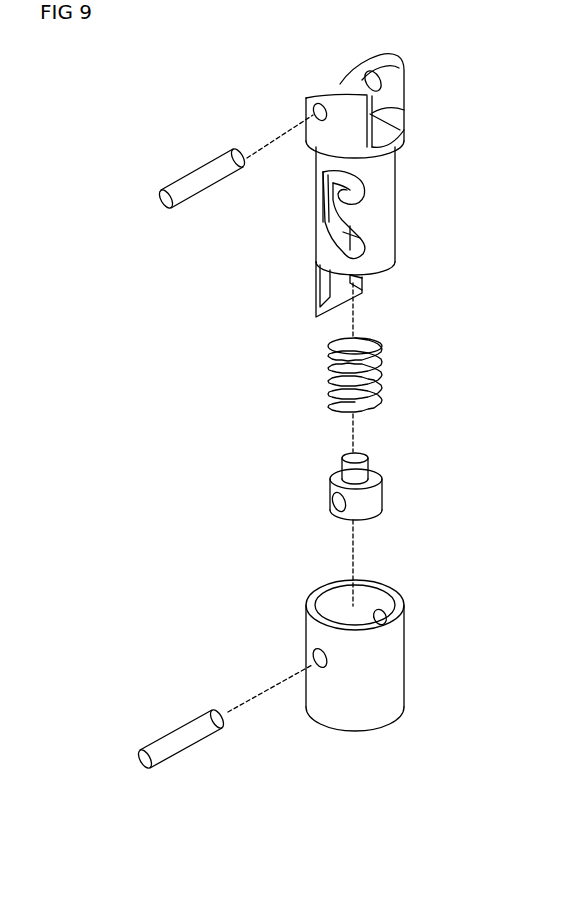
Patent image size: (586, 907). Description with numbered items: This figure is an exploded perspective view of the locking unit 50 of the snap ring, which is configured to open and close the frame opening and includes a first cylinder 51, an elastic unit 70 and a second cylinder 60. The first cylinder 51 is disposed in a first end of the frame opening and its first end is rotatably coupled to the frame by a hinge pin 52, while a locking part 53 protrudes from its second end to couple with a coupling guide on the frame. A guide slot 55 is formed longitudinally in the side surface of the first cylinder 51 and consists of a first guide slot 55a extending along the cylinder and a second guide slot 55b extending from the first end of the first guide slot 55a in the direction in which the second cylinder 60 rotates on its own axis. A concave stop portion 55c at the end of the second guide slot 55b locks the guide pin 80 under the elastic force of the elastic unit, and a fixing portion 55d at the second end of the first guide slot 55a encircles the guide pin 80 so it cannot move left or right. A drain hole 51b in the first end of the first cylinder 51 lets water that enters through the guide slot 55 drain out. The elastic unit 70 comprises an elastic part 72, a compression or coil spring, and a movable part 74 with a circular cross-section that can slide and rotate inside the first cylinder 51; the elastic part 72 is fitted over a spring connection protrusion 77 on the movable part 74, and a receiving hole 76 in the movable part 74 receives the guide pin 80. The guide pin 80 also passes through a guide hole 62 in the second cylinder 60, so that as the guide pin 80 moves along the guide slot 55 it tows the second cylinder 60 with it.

The locking unit 50 is at (170, 105).
The first cylinder 51 is at (393, 175).
The drain hole 51b is at (405, 110).
The hinge pin 52 is at (208, 184).
The locking part 53 is at (315, 298).
The guide slot 55 is at (342, 229).
The first guide slot 55a is at (316, 214).
The second guide slot 55b is at (320, 178).
The stop portion 55c is at (354, 198).
The fixing portion 55d is at (362, 256).
The second cylinder 60 is at (395, 655).
The guide hole 62 is at (314, 665).
The elastic unit 70 is at (283, 372).
The elastic part 72 is at (328, 372).
The movable part 74 is at (377, 492).
The receiving hole 76 is at (335, 500).
The spring connection protrusion 77 is at (363, 470).
The guide pin 80 is at (203, 713).